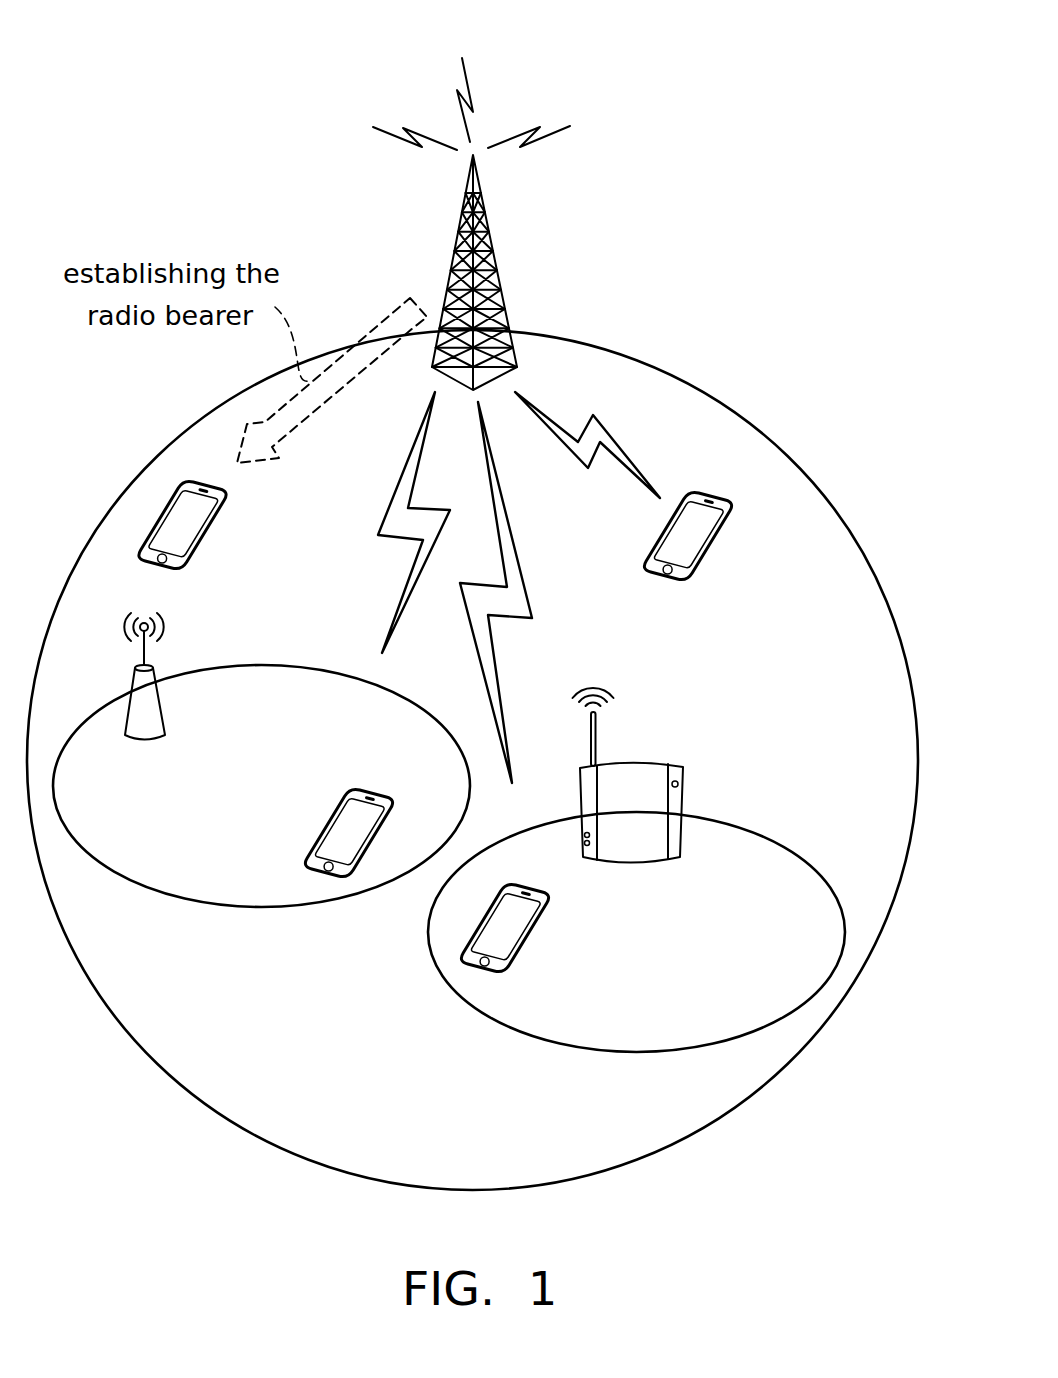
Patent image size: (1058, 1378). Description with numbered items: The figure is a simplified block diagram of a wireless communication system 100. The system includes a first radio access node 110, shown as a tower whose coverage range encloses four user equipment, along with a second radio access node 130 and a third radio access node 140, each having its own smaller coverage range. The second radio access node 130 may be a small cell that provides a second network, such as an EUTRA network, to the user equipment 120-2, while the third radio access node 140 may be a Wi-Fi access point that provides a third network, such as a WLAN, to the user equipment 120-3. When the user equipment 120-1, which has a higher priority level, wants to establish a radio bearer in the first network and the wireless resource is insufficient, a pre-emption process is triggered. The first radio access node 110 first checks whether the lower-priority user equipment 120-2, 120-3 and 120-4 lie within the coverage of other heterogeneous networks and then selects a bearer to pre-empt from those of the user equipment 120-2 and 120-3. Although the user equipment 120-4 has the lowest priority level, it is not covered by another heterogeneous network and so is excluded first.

The wireless communication system 100 is at (729, 126).
The first radio access node 110 is at (492, 228).
The user equipment 120-1 is at (212, 523).
The user equipment 120-2 is at (318, 832).
The user equipment 120-3 is at (535, 928).
The user equipment 120-4 is at (718, 535).
The second radio access node 130 is at (163, 697).
The third radio access node 140 is at (687, 853).